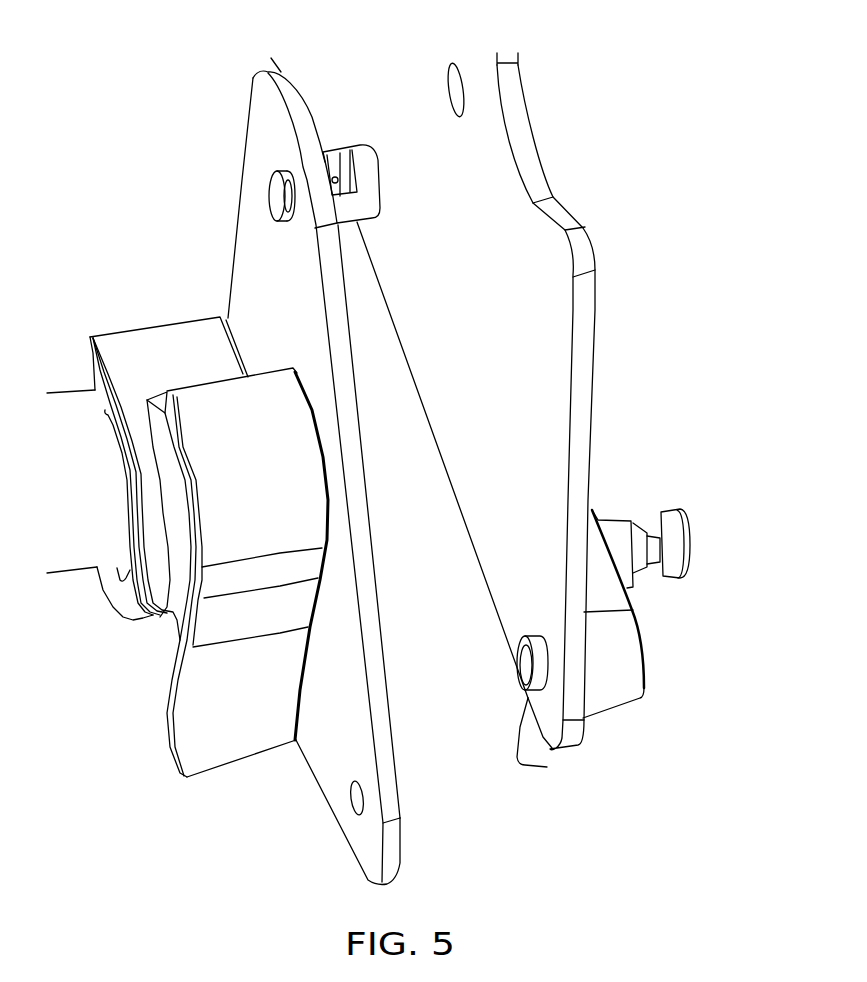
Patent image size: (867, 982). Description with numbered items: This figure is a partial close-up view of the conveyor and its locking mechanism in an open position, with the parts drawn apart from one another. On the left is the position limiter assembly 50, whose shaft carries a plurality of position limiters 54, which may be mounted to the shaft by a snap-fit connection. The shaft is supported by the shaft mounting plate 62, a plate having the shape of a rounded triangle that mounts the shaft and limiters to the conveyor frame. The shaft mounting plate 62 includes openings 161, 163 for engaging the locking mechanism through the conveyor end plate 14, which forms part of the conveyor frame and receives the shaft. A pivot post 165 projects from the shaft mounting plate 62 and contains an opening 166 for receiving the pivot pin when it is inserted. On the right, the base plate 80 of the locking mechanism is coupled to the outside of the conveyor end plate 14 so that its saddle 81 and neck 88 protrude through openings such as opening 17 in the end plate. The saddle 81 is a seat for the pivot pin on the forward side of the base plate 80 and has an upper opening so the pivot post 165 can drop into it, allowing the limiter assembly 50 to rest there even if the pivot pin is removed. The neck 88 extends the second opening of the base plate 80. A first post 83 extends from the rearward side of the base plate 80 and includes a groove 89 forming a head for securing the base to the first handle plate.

The conveyor end plate 14 is at (513, 92).
The opening 17 is at (373, 150).
The position limiter assembly 50 is at (82, 265).
The position limiter 54 is at (150, 355).
The shaft mounting plate 62 is at (333, 806).
The base plate 80 is at (644, 670).
The saddle 81 is at (373, 213).
The first post 83 is at (670, 509).
The neck 88 is at (547, 767).
The groove 89 is at (658, 578).
The opening 161 is at (293, 228).
The opening 163 is at (363, 807).
The pivot post 165 is at (332, 178).
The opening 166 is at (268, 196).